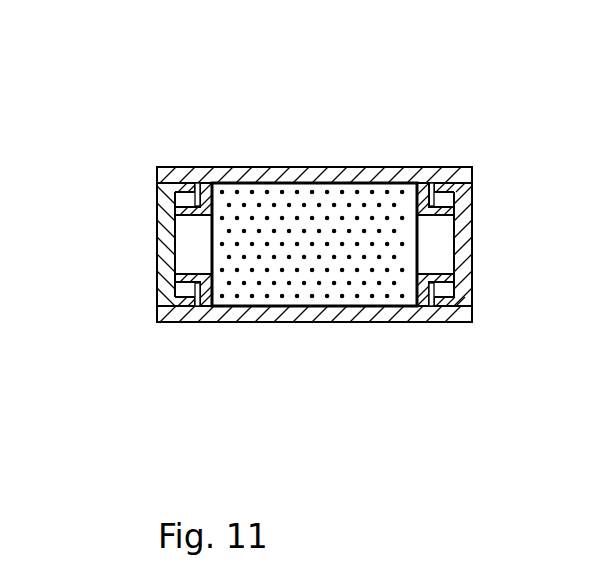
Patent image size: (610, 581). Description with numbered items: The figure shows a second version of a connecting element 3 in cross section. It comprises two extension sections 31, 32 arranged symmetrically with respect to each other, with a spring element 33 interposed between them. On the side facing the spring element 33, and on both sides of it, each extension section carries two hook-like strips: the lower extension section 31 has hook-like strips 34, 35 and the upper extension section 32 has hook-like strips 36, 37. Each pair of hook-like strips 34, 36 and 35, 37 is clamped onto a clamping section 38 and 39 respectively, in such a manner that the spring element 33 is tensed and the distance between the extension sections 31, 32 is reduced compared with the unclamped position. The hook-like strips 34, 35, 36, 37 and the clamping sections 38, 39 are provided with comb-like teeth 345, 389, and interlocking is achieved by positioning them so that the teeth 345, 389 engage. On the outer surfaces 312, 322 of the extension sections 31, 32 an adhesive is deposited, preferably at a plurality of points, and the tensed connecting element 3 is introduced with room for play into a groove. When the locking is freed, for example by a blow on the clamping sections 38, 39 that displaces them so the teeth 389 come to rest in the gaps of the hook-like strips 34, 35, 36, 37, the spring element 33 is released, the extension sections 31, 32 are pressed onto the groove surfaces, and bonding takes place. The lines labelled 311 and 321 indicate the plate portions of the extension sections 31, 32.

The connecting element 3 is at (167, 158).
The extension section 31 is at (315, 306).
The lower plate right portion 311 is at (370, 307).
The outer surface 312 is at (262, 322).
The extension section 32 is at (313, 183).
The upper plate right portion 321 is at (368, 167).
The outer surface 322 is at (258, 167).
The spring element 33 is at (243, 245).
The hook-like strip 34 is at (423, 290).
The hook-like strip 35 is at (208, 290).
The hook-like strip 36 is at (422, 200).
The hook-like strip 37 is at (206, 200).
The clamping section 38 is at (460, 242).
The comb-like teeth 389 is at (445, 185).
The clamping section 39 is at (167, 245).
The comb-like teeth 345 is at (169, 292).